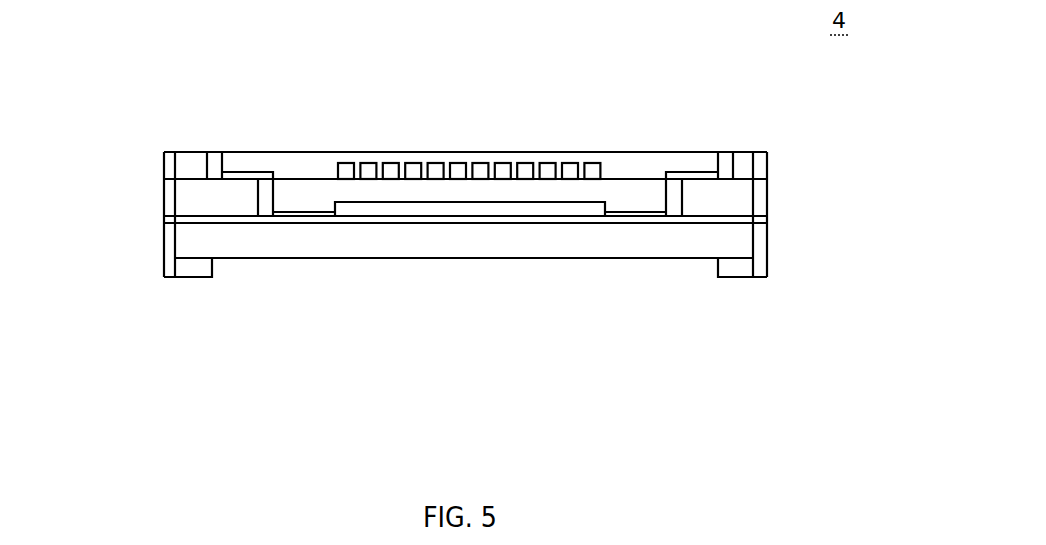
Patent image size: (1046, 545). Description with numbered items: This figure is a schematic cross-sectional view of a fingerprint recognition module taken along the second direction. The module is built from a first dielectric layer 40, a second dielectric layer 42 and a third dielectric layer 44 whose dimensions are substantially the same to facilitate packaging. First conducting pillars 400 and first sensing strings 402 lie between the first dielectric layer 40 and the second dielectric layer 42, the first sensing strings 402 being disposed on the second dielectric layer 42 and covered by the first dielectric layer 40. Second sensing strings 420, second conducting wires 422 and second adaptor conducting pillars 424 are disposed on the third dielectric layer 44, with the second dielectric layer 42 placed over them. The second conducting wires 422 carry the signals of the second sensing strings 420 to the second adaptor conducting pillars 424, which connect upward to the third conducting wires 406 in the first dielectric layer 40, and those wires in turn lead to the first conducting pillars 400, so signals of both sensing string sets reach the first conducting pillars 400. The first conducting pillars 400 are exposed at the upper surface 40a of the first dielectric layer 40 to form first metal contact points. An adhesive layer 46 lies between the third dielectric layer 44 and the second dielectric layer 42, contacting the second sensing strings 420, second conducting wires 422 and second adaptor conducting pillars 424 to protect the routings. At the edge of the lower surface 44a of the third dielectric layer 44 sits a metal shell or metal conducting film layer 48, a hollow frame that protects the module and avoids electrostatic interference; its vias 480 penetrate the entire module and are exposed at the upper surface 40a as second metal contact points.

The first dielectric layer 40 is at (192, 152).
The upper surface of the first dielectric layer 40a is at (613, 152).
The first conducting pillars 400 is at (723, 152).
The first sensing strings 402 is at (389, 163).
The third conducting wires 406 is at (250, 172).
The second dielectric layer 42 is at (768, 188).
The second sensing strings 420 is at (577, 212).
The second conducting wires 422 is at (322, 215).
The second adaptor conducting pillars 424 is at (262, 212).
The third dielectric layer 44 is at (768, 237).
The lower surface of the third dielectric layer 44a is at (465, 262).
The adhesive layer 46 is at (680, 220).
The metal shell or metal conducting film layer 48 is at (768, 265).
The vias 480 is at (163, 197).